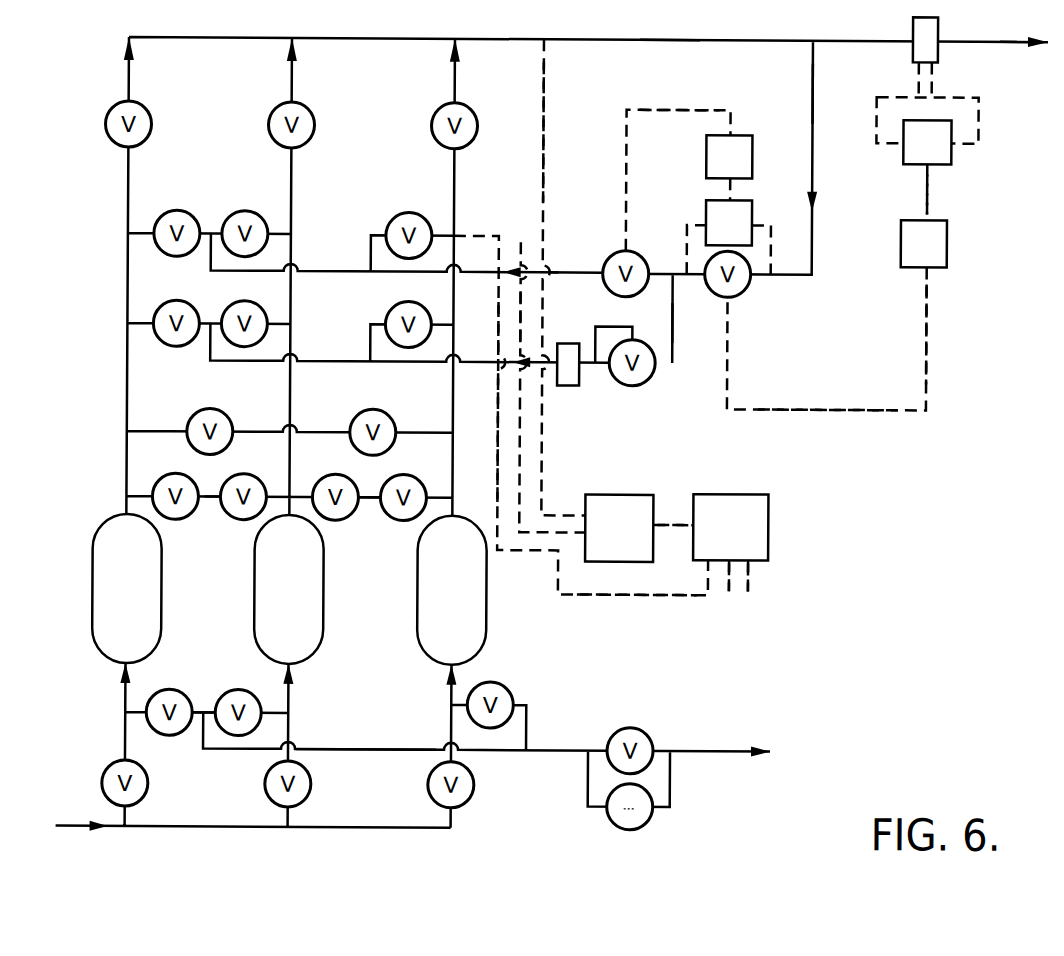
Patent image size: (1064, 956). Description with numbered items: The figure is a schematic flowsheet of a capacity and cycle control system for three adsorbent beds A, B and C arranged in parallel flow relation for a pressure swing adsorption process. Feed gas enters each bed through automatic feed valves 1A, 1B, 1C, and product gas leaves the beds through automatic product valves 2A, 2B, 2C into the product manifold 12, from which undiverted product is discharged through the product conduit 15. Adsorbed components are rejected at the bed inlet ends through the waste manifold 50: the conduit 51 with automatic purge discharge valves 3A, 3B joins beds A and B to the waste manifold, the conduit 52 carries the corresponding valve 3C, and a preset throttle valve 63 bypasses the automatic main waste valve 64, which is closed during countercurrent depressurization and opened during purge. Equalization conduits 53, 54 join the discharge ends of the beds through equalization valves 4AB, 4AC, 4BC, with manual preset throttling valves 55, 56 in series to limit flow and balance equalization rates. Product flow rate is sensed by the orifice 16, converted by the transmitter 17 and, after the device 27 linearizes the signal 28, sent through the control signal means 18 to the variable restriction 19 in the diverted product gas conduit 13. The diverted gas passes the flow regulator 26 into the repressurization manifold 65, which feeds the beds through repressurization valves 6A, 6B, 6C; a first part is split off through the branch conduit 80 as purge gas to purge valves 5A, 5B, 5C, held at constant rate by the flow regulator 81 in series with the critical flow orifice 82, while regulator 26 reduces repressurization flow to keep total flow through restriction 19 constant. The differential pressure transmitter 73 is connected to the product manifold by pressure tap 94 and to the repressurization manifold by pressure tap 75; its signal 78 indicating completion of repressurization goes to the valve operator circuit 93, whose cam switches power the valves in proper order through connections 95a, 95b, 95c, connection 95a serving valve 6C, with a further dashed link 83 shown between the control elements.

The automatic feed valve 1A is at (151, 789).
The automatic feed valve 1B is at (314, 789).
The automatic feed valve 1C is at (478, 789).
The automatic product valve 2A is at (146, 108).
The automatic product valve 2B is at (309, 108).
The automatic product valve 2C is at (472, 108).
The automatic purge discharge valve 3A is at (165, 734).
The automatic purge discharge valve 3B is at (237, 690).
The automatic purge discharge valve 3C is at (505, 683).
The equalization valve 4AB is at (163, 478).
The equalization valve 4AC is at (357, 418).
The equalization valve 4BC is at (390, 476).
The purge valve 5A is at (160, 306).
The purge valve 5B is at (236, 303).
The purge valve 5C is at (392, 305).
The repressurization valve 6A is at (172, 211).
The repressurization valve 6B is at (241, 211).
The repressurization valve 6C is at (400, 212).
The product manifold 12 is at (662, 37).
The diverted product gas conduit 13 is at (813, 100).
The product conduit 15 is at (1020, 37).
The orifice 16 is at (913, 35).
The transmitter 17 is at (952, 150).
The control signal means 18 is at (940, 327).
The variable restriction 19 is at (745, 290).
The flow regulator 26 is at (608, 255).
The signal conversion device 27 is at (948, 245).
The signal 28 is at (945, 193).
The waste manifold 50 is at (355, 745).
The conduit 51 is at (753, 215).
The conduit 52 is at (680, 107).
The equalization conduit 53 is at (753, 150).
The equalization conduit 54 is at (366, 500).
The manual preset throttling valve 55 is at (237, 475).
The manual preset throttling valve 56 is at (325, 478).
The preset throttle valve 63 is at (652, 822).
The main waste valve 64 is at (650, 735).
The repressurization manifold 65 is at (557, 276).
The differential pressure transmitter 73 is at (620, 492).
The pressure tap 75 is at (522, 258).
The signal 78 is at (676, 522).
The branch conduit 80 is at (674, 312).
The flow regulator 81 is at (648, 380).
The critical flow orifice 82 is at (576, 385).
The signal line 83 is at (925, 412).
The valve operator circuit 93 is at (735, 492).
The pressure tap 94 is at (546, 95).
The connection 95a is at (473, 236).
The control signal line b 95b is at (735, 595).
The control signal line c 95c is at (755, 580).